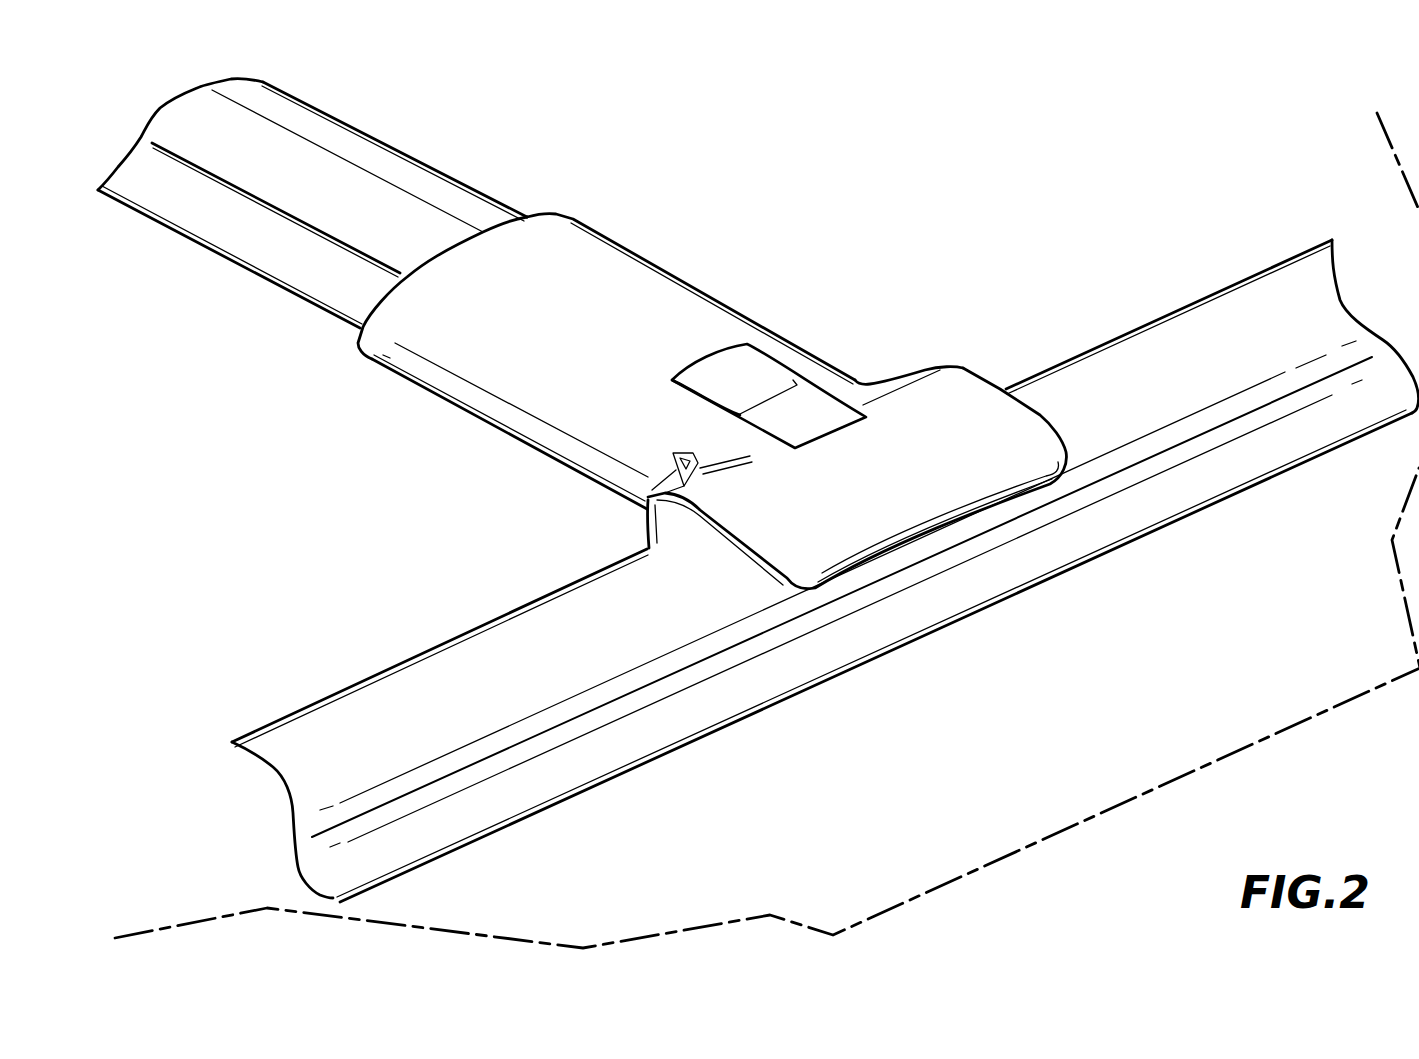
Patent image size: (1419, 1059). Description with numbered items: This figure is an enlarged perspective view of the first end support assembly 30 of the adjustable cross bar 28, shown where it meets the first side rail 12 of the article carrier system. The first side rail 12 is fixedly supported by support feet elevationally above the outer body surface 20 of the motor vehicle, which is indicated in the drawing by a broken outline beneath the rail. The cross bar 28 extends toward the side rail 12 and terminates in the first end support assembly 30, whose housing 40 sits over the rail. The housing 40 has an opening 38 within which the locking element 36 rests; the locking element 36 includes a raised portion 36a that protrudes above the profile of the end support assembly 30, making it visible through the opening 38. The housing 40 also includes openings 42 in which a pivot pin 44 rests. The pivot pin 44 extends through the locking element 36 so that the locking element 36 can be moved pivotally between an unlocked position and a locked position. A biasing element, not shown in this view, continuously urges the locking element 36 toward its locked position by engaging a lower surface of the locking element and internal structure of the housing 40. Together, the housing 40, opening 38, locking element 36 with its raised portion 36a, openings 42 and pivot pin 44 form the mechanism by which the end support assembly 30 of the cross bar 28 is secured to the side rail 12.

The first side rail 12 is at (1133, 320).
The outer body surface 20 is at (1135, 774).
The cross bar 28 is at (283, 273).
The first end support assembly 30 is at (705, 284).
The locking element 36 is at (783, 403).
The raised portion 36a is at (740, 367).
The opening 38 is at (855, 379).
The housing 40 is at (435, 390).
The openings 42 is at (645, 503).
The pivot pin 44 is at (672, 457).